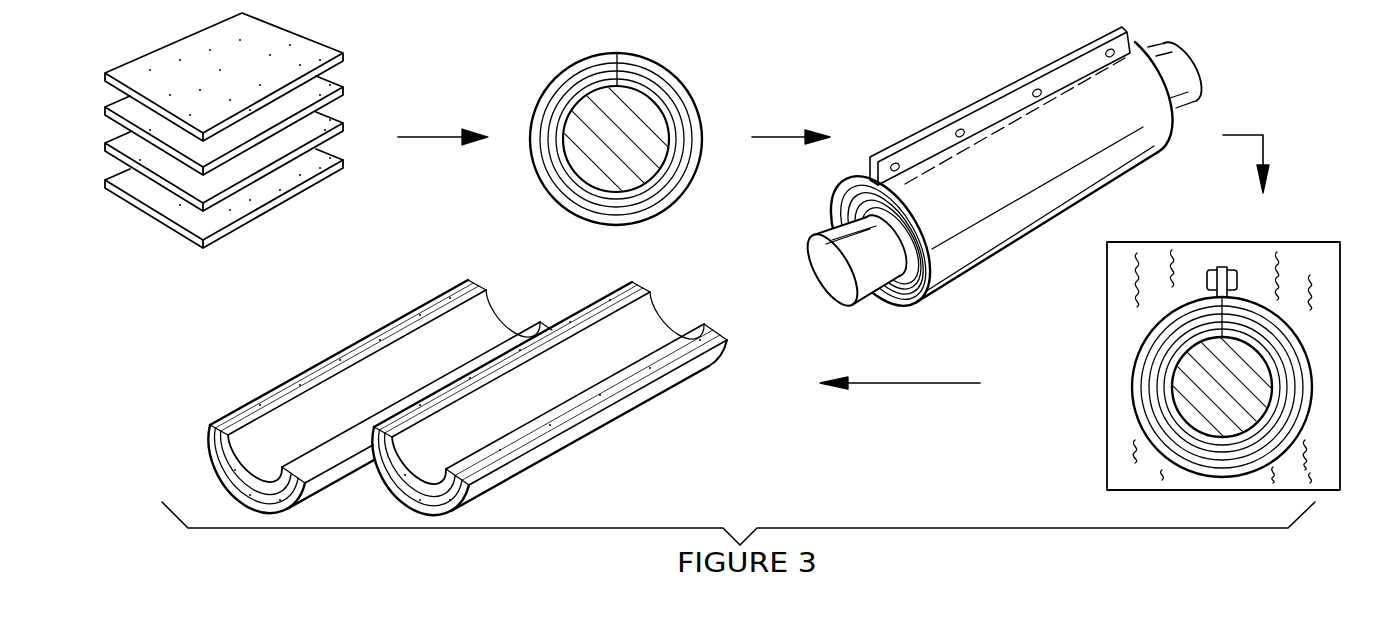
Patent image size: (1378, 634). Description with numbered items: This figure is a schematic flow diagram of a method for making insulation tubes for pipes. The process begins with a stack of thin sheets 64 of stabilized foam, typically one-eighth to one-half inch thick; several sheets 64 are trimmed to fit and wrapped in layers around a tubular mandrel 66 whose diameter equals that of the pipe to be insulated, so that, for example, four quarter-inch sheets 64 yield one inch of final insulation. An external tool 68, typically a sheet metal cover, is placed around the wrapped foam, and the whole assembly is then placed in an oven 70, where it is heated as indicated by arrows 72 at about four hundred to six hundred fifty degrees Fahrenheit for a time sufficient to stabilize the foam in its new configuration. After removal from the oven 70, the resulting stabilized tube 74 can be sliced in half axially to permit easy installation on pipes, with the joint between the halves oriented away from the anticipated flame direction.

The thin sheets of stabilized foam 64 is at (287, 40).
The tubular mandrel 66 is at (642, 153).
The external tool 68 is at (1105, 33).
The oven 70 is at (1323, 240).
The arrows 72 is at (1183, 268).
The stabilized tube 74 is at (208, 443).